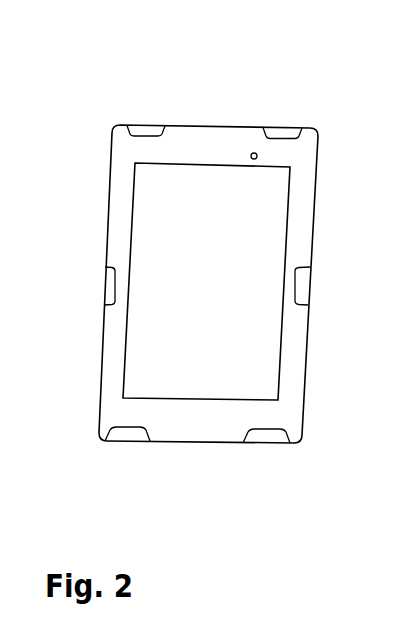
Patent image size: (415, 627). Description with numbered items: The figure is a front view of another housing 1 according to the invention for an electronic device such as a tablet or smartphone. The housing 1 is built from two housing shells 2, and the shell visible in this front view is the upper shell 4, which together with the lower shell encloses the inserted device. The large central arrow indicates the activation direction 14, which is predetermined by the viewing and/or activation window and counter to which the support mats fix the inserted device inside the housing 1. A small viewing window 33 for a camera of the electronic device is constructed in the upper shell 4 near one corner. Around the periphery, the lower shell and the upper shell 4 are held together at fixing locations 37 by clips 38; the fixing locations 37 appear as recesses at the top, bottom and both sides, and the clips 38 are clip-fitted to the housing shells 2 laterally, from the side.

The housing 1 is at (219, 64).
The housing shell 2 is at (295, 407).
The upper shell 4 is at (298, 352).
The activation direction 14 is at (201, 231).
The viewing window 33 is at (257, 156).
The fixing location 37 is at (150, 117).
The clip 38 is at (142, 128).